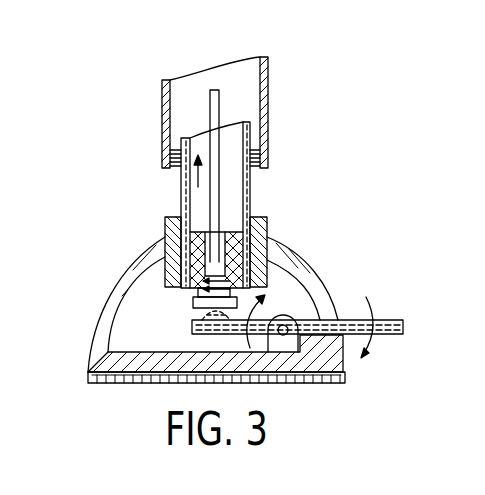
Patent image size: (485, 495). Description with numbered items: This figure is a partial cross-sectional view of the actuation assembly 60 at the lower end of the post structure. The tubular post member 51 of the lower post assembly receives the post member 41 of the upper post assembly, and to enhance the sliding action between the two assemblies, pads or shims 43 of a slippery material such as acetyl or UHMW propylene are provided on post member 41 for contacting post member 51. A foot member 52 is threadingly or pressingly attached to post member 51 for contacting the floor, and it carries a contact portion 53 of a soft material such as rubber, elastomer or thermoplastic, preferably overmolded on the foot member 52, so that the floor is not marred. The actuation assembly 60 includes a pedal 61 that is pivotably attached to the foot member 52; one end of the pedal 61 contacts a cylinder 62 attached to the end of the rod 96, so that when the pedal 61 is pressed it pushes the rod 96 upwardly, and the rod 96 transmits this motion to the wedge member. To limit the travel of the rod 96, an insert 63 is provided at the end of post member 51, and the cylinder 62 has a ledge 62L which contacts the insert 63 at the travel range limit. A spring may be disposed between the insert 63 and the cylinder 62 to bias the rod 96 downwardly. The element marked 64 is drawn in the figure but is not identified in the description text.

The post member 41 is at (265, 75).
The rod 96 is at (215, 105).
The shims 43 is at (172, 168).
The post member 51 is at (250, 182).
The actuation assembly 60 is at (314, 204).
The cylinder 62 is at (222, 266).
The insert 63 is at (193, 240).
The foot member 52 is at (110, 302).
The valve plate 64 is at (192, 301).
The ledge 62L is at (193, 306).
The pedal 61 is at (347, 318).
The contact portion 53 is at (341, 376).